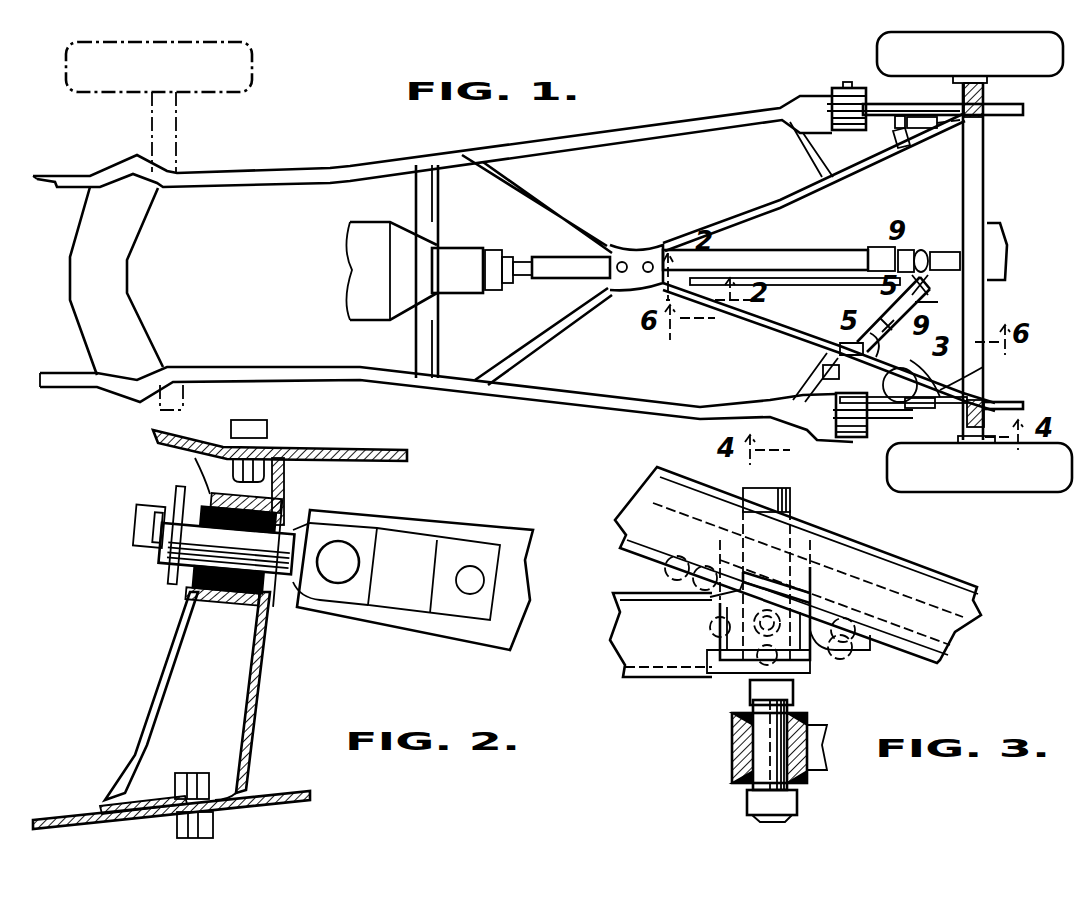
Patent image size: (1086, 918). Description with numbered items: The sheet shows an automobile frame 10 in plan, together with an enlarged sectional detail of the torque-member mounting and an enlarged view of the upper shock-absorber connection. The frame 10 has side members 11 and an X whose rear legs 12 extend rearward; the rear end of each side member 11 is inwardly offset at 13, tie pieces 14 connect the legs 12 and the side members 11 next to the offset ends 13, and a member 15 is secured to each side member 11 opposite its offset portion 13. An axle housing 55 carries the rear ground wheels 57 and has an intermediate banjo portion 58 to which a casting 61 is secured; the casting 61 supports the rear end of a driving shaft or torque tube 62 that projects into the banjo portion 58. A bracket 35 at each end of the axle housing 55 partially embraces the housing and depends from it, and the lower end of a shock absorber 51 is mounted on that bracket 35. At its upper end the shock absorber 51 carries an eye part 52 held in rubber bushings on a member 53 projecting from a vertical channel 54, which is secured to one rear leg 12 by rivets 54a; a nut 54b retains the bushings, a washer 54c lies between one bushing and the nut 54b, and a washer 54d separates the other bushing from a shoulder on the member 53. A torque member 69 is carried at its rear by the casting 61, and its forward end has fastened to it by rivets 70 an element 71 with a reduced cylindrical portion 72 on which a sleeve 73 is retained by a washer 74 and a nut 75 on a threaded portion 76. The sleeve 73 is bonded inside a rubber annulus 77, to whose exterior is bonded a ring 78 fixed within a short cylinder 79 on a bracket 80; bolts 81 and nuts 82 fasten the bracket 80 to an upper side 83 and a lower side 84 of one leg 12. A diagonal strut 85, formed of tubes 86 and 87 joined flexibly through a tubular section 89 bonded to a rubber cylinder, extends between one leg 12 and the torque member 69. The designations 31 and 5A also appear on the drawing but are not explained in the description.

In FIG. 1, the automobile frame 10 is at (611, 414).
In FIG. 1, the side members 11 is at (690, 108).
In FIG. 1, the rear legs of the X 12 is at (748, 208).
In FIG. 2, the rear legs of the X 12 is at (404, 453).
In FIG. 1, the inwardly offset rear end 13 is at (822, 135).
In FIG. 1, the tie pieces 14 is at (812, 368).
In FIG. 1, the member 15 is at (785, 100).
In FIG. 1, the spring unit 31 is at (872, 440).
In FIG. 1, the bracket 35 is at (988, 100).
In FIG. 1, the shock absorber 51 is at (925, 130).
In FIG. 1, the eye part 52 is at (912, 392).
In FIG. 3, the eye part 52 is at (815, 728).
In FIG. 1, the member 53 is at (910, 417).
In FIG. 3, the member 53 is at (748, 692).
In FIG. 3, the vertical channel 54 is at (815, 665).
In FIG. 3, the rivets 54a is at (880, 640).
In FIG. 3, the nut 54b is at (748, 792).
In FIG. 3, the washer 54c is at (760, 712).
In FIG. 3, the washer 54d is at (730, 718).
In FIG. 1, the axle housing 55 is at (988, 165).
In FIG. 3, the axle housing 55 is at (668, 585).
In FIG. 1, the rear ground wheels 57 is at (1040, 78).
In FIG. 1, the banjo portion 58 is at (1000, 240).
In FIG. 1, the casting 61 is at (920, 250).
In FIG. 1, the driving shaft or torque tube 62 is at (808, 250).
In FIG. 1, the torque member 69 is at (805, 282).
In FIG. 2, the torque member 69 is at (495, 640).
In FIG. 2, the rivets 70 is at (340, 540).
In FIG. 2, the element 71 is at (395, 610).
In FIG. 2, the reduced cylindrical portion 72 is at (285, 525).
In FIG. 2, the sleeve 73 is at (168, 580).
In FIG. 2, the washer 74 is at (171, 500).
In FIG. 2, the nut 75 is at (152, 560).
In FIG. 2, the threaded portion 76 is at (133, 550).
In FIG. 2, the rubber annulus 77 is at (270, 600).
In FIG. 2, the ring 78 is at (235, 600).
In FIG. 2, the short cylinder 79 is at (200, 600).
In FIG. 2, the bracket 80 is at (250, 712).
In FIG. 2, the bolts 81 is at (215, 820).
In FIG. 2, the nuts 82 is at (188, 773).
In FIG. 2, the upper side 83 is at (345, 448).
In FIG. 2, the lower side 84 is at (285, 790).
In FIG. 1, the diagonal strut 85 is at (871, 312).
In FIG. 1, the tube 86 is at (843, 371).
In FIG. 1, the tube 87 is at (934, 292).
In FIG. 1, the tubular section 89 is at (893, 330).
In FIG. 1, the bracket arm 5A is at (939, 368).